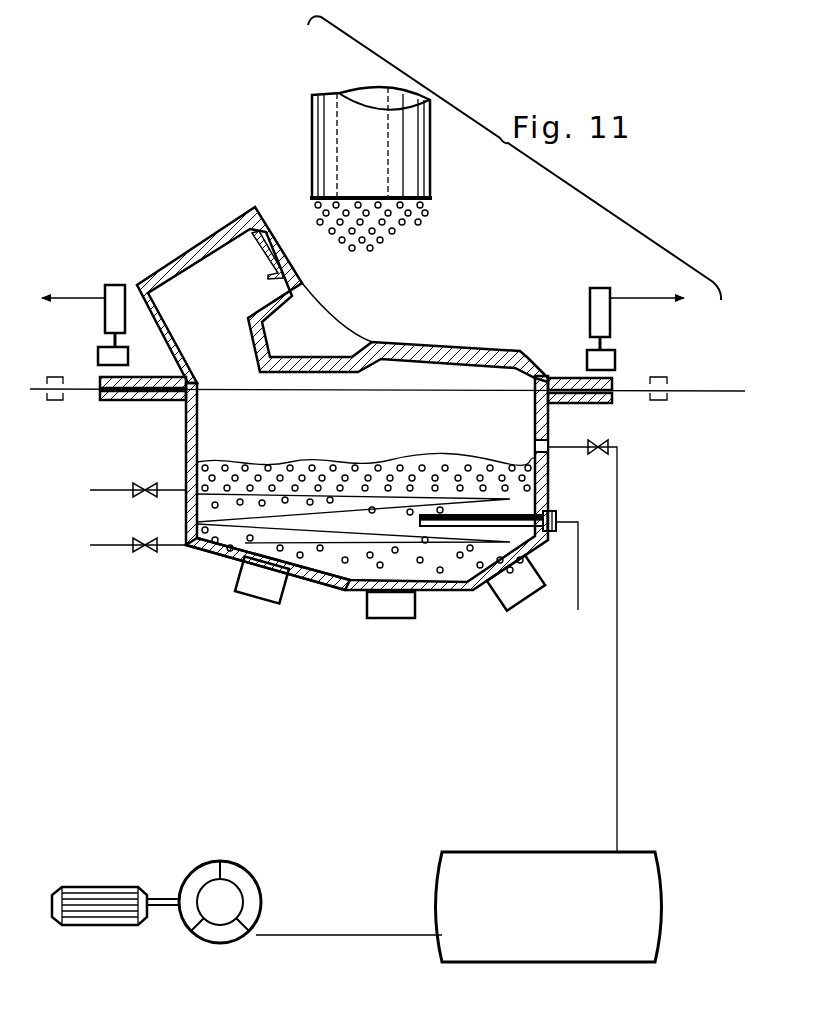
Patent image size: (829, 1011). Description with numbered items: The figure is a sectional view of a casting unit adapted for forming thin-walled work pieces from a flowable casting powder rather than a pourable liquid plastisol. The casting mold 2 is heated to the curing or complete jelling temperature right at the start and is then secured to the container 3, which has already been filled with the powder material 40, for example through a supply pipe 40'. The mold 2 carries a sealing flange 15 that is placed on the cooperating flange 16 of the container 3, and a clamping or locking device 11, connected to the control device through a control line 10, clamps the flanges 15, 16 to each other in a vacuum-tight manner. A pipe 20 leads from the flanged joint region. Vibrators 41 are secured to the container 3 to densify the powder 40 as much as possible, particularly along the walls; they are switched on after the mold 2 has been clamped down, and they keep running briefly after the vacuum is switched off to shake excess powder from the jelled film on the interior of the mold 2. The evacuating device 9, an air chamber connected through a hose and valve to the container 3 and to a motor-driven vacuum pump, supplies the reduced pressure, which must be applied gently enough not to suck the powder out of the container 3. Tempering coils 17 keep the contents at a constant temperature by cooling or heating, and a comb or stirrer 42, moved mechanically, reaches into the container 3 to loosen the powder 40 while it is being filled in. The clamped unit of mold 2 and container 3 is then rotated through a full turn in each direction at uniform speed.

The casting mold 2 is at (375, 331).
The container 3 is at (452, 594).
The evacuating device 9 is at (653, 888).
The control line 10 is at (665, 299).
The clamping or locking device 11 is at (103, 350).
The sealing flange 15 is at (612, 381).
The cooperating flange 16 is at (612, 402).
The tempering coils 17 is at (247, 546).
The pipe 20 is at (680, 393).
The powder material 40 is at (398, 387).
The supply pipe 40' is at (395, 142).
The vibrators 41 is at (254, 586).
The comb or stirrer 42 is at (555, 511).